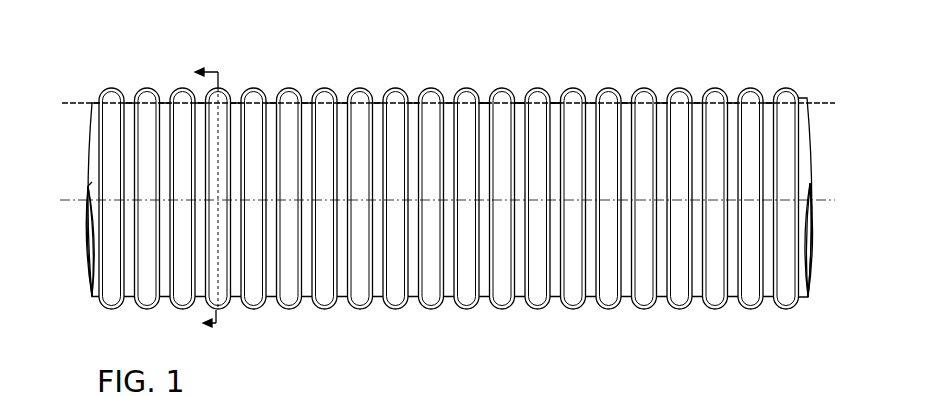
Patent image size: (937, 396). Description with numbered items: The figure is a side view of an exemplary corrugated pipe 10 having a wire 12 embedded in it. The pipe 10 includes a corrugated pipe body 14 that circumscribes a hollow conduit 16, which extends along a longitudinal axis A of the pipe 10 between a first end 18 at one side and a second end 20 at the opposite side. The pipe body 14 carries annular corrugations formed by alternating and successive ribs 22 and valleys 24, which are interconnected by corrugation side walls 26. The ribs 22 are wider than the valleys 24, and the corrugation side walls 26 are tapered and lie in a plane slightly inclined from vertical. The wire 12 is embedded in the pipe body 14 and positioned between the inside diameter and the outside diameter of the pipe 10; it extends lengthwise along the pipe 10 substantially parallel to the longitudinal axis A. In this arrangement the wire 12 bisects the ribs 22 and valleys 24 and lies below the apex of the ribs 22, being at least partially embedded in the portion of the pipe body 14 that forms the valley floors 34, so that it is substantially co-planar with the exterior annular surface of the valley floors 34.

The corrugated pipe 10 is at (137, 53).
The wire 12 is at (82, 103).
The corrugated pipe body 14 is at (88, 262).
The hollow conduit 16 is at (83, 237).
The first end 18 is at (78, 181).
The second end 20 is at (823, 181).
The ribs 22 is at (466, 311).
The valleys 24 is at (589, 298).
The corrugation side walls 26 is at (408, 91).
The valley floors 34 is at (558, 98).
The longitudinal axis A is at (74, 196).